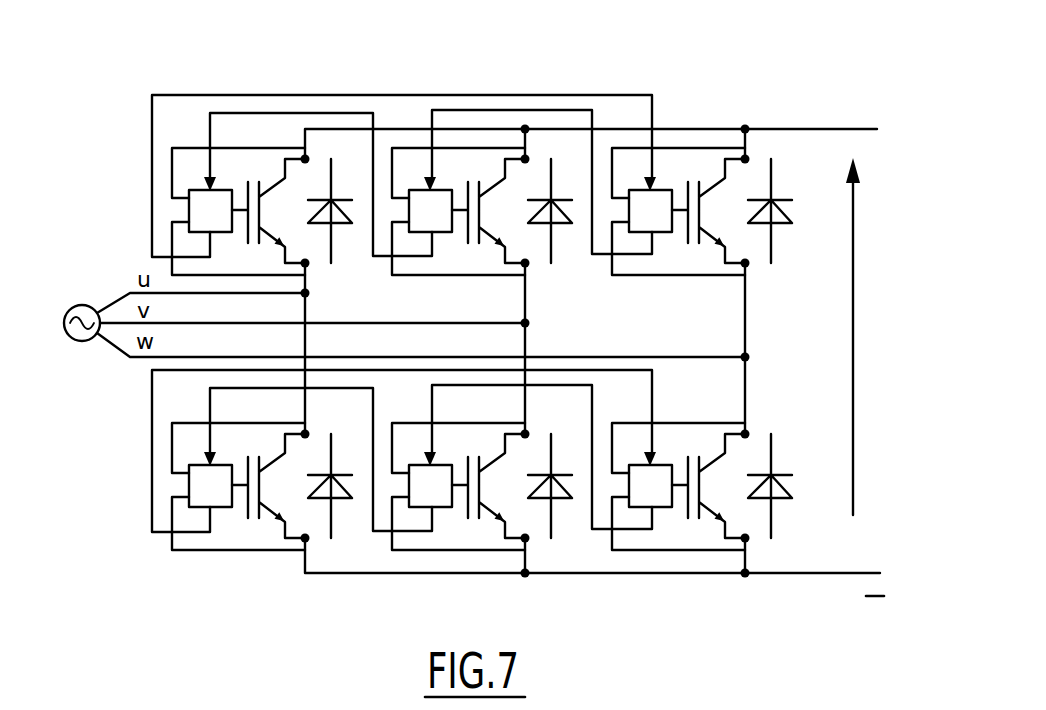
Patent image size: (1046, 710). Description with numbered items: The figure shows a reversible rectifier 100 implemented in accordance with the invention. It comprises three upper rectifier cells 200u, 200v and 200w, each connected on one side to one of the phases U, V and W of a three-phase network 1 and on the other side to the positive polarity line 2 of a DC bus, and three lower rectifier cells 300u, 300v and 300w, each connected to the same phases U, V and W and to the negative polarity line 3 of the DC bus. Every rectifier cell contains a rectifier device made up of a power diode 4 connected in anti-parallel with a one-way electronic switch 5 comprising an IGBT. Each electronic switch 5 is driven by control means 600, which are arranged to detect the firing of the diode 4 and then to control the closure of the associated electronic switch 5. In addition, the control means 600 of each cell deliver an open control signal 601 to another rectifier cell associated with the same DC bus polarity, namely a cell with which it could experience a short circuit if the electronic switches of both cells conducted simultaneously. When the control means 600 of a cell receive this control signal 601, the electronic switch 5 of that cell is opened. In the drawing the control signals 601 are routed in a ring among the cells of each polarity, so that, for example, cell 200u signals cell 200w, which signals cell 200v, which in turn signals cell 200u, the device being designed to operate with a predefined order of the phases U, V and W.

The three-phase network 1 is at (82, 306).
The positive polarity line 2 is at (828, 130).
The negative polarity line 3 is at (822, 577).
The power diode 4 is at (338, 224).
The one-way electronic switch 5 is at (249, 192).
The reversible rectifier 100 is at (186, 84).
The rectifier cell 200u is at (133, 141).
The rectifier cell 200v is at (456, 100).
The rectifier cell 200w is at (743, 118).
The rectifier cell 300u is at (261, 563).
The rectifier cell 300v is at (551, 585).
The rectifier cell 300w is at (772, 586).
The control means 600 is at (200, 215).
The open control signal 601 is at (288, 111).